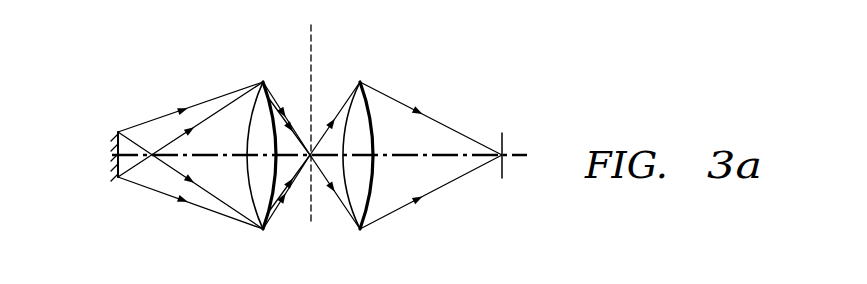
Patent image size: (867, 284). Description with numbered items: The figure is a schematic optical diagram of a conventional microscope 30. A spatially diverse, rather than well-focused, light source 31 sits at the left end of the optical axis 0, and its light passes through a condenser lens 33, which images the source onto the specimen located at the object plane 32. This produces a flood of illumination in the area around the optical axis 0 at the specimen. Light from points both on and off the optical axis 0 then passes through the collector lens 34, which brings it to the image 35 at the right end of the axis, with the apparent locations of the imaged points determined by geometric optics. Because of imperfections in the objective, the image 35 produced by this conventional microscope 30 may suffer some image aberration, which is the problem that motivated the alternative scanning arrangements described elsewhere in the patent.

The conventional microscope 30 is at (142, 66).
The light source 31 is at (108, 139).
The object plane 32 is at (310, 37).
The condenser lens 33 is at (253, 202).
The collector lens 34 is at (368, 208).
The optical axis 0 is at (510, 150).
The image 35 is at (506, 168).